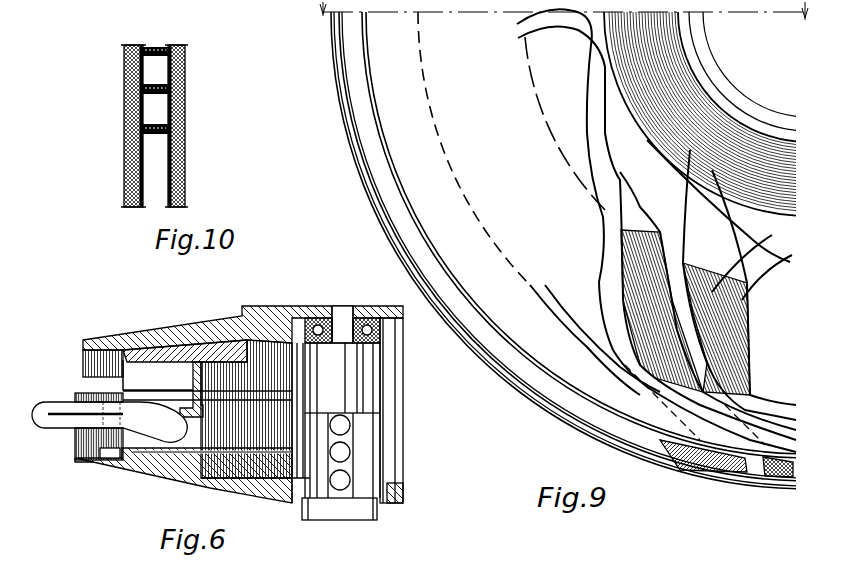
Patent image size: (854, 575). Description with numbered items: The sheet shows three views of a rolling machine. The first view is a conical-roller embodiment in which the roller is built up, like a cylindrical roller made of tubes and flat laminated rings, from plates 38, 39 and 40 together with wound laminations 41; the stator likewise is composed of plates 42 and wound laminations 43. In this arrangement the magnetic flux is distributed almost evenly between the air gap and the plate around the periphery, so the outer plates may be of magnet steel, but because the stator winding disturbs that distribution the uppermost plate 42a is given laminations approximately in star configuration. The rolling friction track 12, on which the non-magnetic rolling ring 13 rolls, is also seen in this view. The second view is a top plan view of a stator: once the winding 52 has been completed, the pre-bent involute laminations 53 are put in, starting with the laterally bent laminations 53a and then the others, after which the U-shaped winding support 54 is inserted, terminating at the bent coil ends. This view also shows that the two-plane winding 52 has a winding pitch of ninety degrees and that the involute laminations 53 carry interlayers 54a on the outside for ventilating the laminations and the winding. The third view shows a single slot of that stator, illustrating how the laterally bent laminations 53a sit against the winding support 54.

In FIG. 6, the rolling friction track 12 is at (172, 430).
In FIG. 6, the non-magnetic rolling ring 13 is at (175, 391).
In FIG. 6, the plate 38 is at (178, 335).
In FIG. 6, the plate 39 is at (245, 392).
In FIG. 6, the plate 40 is at (215, 388).
In FIG. 6, the wound laminations 41 is at (83, 356).
In FIG. 6, the stator plates 42 is at (138, 458).
In FIG. 6, the uppermost plate 42a is at (93, 462).
In FIG. 6, the wound laminations 43 is at (258, 411).
In FIG. 9, the winding 52 is at (610, 301).
In FIG. 9, the involute laminations 53 is at (680, 440).
In FIG. 10, the laterally bent laminations 53a is at (146, 46).
In FIG. 10, the U-shaped winding support 54 is at (161, 177).
In FIG. 9, the interlayers 54a is at (736, 478).